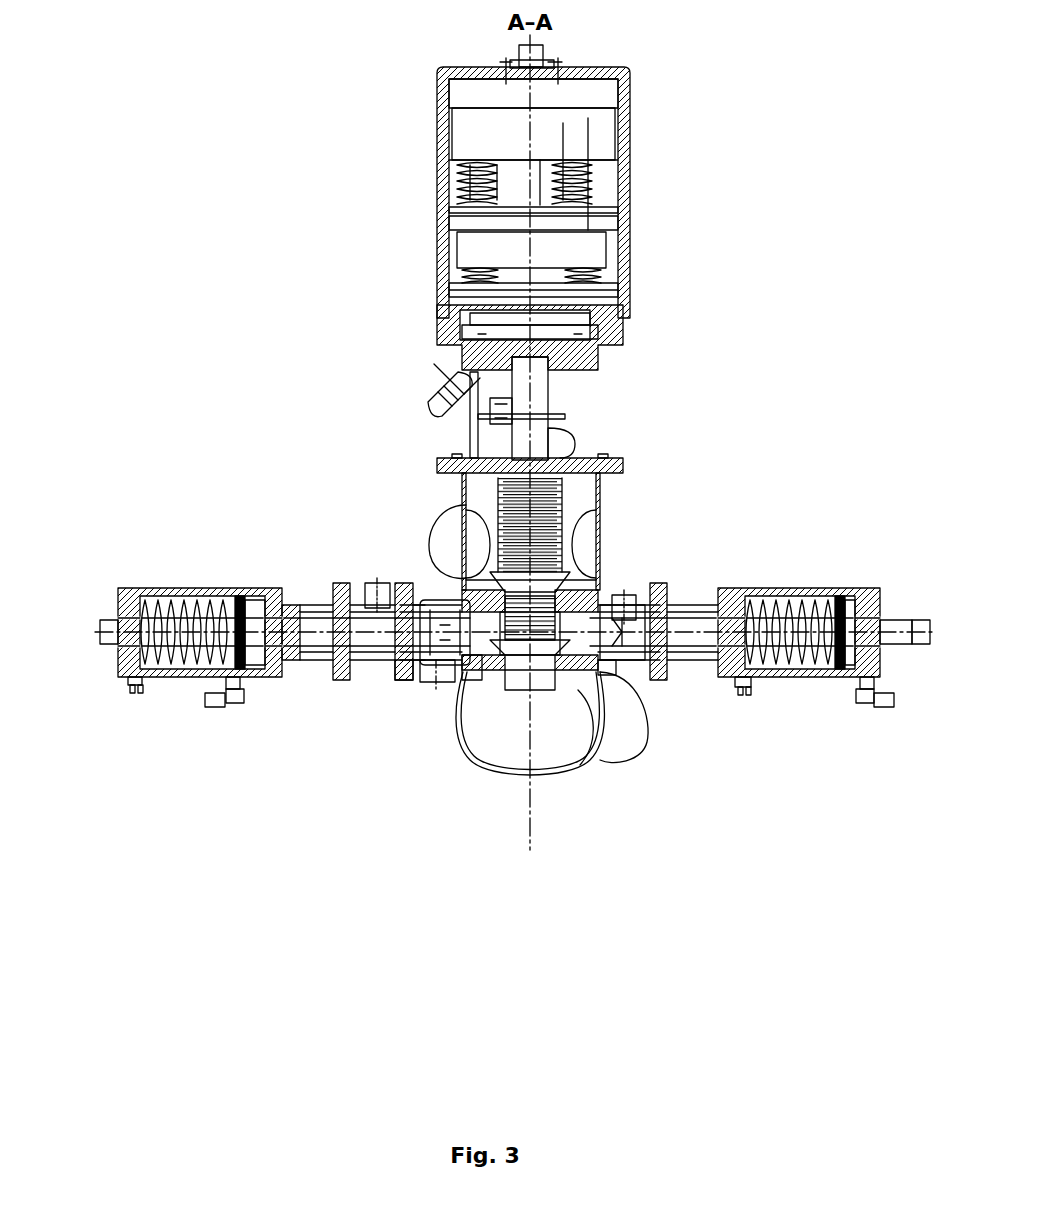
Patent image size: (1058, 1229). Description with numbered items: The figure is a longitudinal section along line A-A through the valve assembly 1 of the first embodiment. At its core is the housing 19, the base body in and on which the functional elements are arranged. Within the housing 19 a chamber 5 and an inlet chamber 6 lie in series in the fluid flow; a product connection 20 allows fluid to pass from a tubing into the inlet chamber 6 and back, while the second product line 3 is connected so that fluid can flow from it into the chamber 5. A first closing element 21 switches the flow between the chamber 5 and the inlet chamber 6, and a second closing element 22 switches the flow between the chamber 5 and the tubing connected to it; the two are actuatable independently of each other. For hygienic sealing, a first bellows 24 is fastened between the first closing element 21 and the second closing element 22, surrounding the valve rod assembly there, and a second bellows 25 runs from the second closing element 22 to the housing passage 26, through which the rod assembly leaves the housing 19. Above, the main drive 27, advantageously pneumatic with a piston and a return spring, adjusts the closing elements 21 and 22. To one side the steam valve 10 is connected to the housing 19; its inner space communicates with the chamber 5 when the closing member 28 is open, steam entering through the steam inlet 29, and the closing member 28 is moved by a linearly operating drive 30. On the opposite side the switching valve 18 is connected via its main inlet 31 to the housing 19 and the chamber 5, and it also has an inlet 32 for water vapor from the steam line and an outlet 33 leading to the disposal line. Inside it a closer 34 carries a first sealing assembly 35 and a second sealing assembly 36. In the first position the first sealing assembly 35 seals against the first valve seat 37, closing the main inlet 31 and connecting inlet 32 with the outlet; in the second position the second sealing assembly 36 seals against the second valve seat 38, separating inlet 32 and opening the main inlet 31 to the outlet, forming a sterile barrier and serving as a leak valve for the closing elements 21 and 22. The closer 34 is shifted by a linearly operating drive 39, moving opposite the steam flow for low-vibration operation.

The valve assembly 1 is at (305, 264).
The second product line 3 is at (600, 778).
The chamber 5 is at (572, 610).
The inlet chamber 6 is at (480, 493).
The steam valve 10 is at (710, 680).
The switching valve 18 is at (370, 680).
The housing 19 is at (600, 512).
The product connection 20 is at (445, 520).
The first closing element 21 is at (600, 548).
The second closing element 22 is at (512, 688).
The first bellows 24 is at (592, 592).
The second bellows 25 is at (602, 484).
The housing passage 26 is at (560, 455).
The main drive 27 is at (630, 142).
The closing member 28 is at (622, 665).
The steam inlet 29 is at (644, 598).
The linearly operating drive 30 is at (798, 588).
The main inlet 31 is at (405, 584).
The inlet 32 is at (345, 584).
The outlet 33 is at (440, 685).
The closer 34 is at (450, 682).
The first sealing assembly 35 is at (468, 688).
The second sealing assembly 36 is at (420, 680).
The first valve seat 37 is at (470, 560).
The second valve seat 38 is at (378, 600).
The linearly operating drive 39 is at (178, 588).